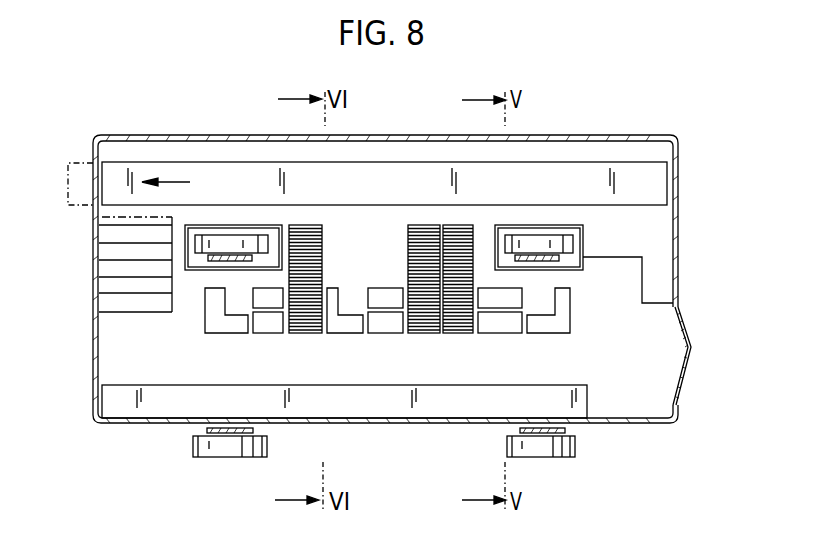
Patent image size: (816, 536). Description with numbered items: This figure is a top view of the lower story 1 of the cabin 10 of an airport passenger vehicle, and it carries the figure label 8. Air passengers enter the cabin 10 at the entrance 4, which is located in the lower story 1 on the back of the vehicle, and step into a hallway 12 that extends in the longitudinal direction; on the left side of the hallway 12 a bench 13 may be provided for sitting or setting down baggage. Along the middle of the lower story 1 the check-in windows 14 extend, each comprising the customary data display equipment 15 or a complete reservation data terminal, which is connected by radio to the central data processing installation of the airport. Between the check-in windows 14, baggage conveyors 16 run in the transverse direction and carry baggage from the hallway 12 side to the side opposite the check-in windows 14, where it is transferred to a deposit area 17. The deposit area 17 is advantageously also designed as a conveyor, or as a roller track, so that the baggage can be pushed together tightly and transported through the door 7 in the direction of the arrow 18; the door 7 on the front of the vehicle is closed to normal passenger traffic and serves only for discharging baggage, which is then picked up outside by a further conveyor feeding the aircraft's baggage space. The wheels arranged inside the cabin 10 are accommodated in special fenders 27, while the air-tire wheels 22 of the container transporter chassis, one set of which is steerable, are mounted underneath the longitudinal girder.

The lower story 1 is at (633, 283).
The entrance 4 is at (688, 362).
The door 7 is at (92, 166).
The ventilation slots 8 is at (109, 265).
The cabin 10 is at (575, 134).
The hallway 12 is at (553, 374).
The bench 13 is at (388, 402).
The check-in windows 14 is at (244, 304).
The data display equipment 15 is at (267, 322).
The baggage conveyors 16 is at (310, 313).
The deposit area 17 is at (236, 170).
The arrow 18 is at (168, 182).
The air-tire wheels 22 is at (223, 447).
The fenders 27 is at (198, 270).